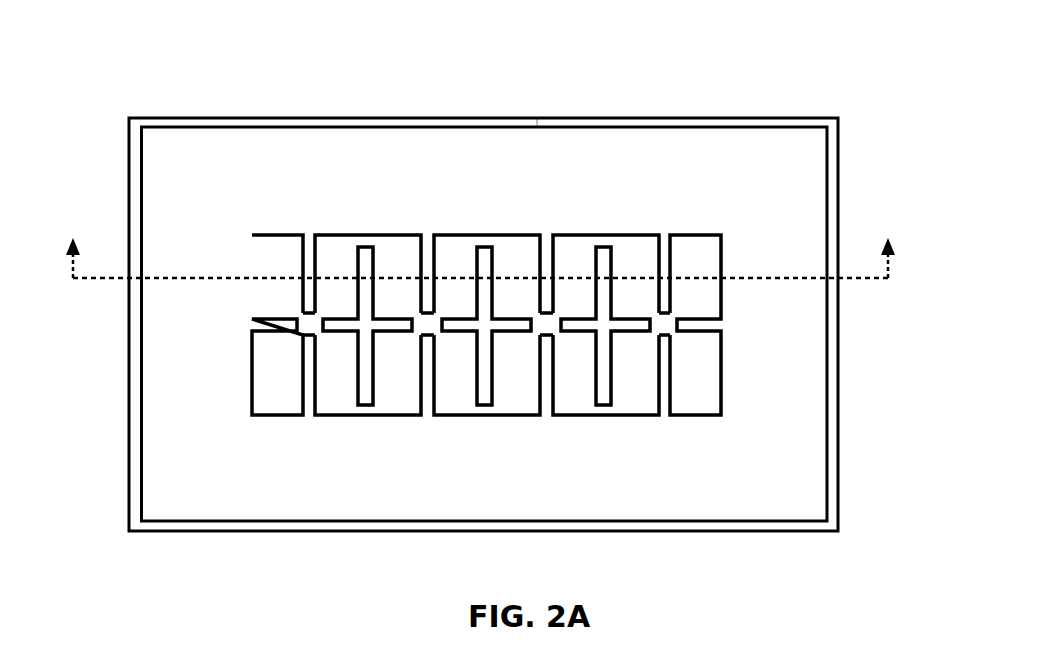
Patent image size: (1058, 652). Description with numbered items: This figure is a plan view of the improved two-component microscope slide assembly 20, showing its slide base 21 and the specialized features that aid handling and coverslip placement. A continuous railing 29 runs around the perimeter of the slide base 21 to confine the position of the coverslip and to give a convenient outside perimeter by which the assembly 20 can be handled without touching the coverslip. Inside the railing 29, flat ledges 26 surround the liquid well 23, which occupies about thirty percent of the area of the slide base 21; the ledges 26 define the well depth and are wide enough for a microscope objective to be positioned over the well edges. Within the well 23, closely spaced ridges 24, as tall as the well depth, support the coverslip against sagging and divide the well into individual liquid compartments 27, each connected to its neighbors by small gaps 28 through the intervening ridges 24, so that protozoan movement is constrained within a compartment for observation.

The microscope slide assembly 20 is at (792, 82).
The slide base 21 is at (178, 115).
The liquid well 23 is at (267, 233).
The ridges 24 is at (298, 293).
The ledges 26 is at (623, 163).
The liquid compartments 27 is at (390, 255).
The gaps 28 is at (297, 333).
The railing 29 is at (537, 122).